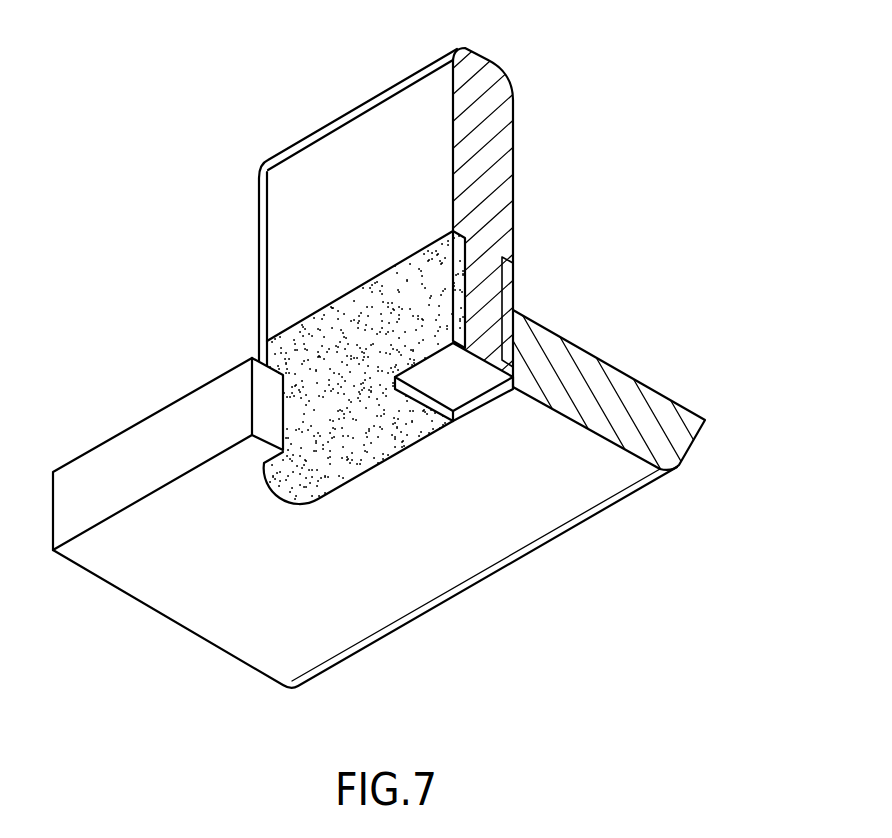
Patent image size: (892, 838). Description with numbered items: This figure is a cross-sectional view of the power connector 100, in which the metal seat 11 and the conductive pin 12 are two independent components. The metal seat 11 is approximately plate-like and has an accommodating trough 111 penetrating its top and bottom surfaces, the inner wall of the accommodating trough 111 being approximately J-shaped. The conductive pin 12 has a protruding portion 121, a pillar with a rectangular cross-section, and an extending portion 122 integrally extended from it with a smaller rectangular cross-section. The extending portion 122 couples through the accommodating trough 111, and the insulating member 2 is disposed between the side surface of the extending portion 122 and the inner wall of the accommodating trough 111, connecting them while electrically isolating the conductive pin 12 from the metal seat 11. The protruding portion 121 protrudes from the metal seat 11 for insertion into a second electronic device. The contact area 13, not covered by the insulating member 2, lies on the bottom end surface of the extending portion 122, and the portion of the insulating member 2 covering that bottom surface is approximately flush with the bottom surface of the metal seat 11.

The power connector 100 is at (101, 38).
The metal seat 11 is at (412, 472).
The accommodating trough 111 is at (516, 346).
The conductive pin 12 is at (453, 226).
The protruding portion 121 is at (480, 112).
The extending portion 122 is at (488, 305).
The contact area 13 is at (467, 373).
The insulating member 2 is at (307, 350).